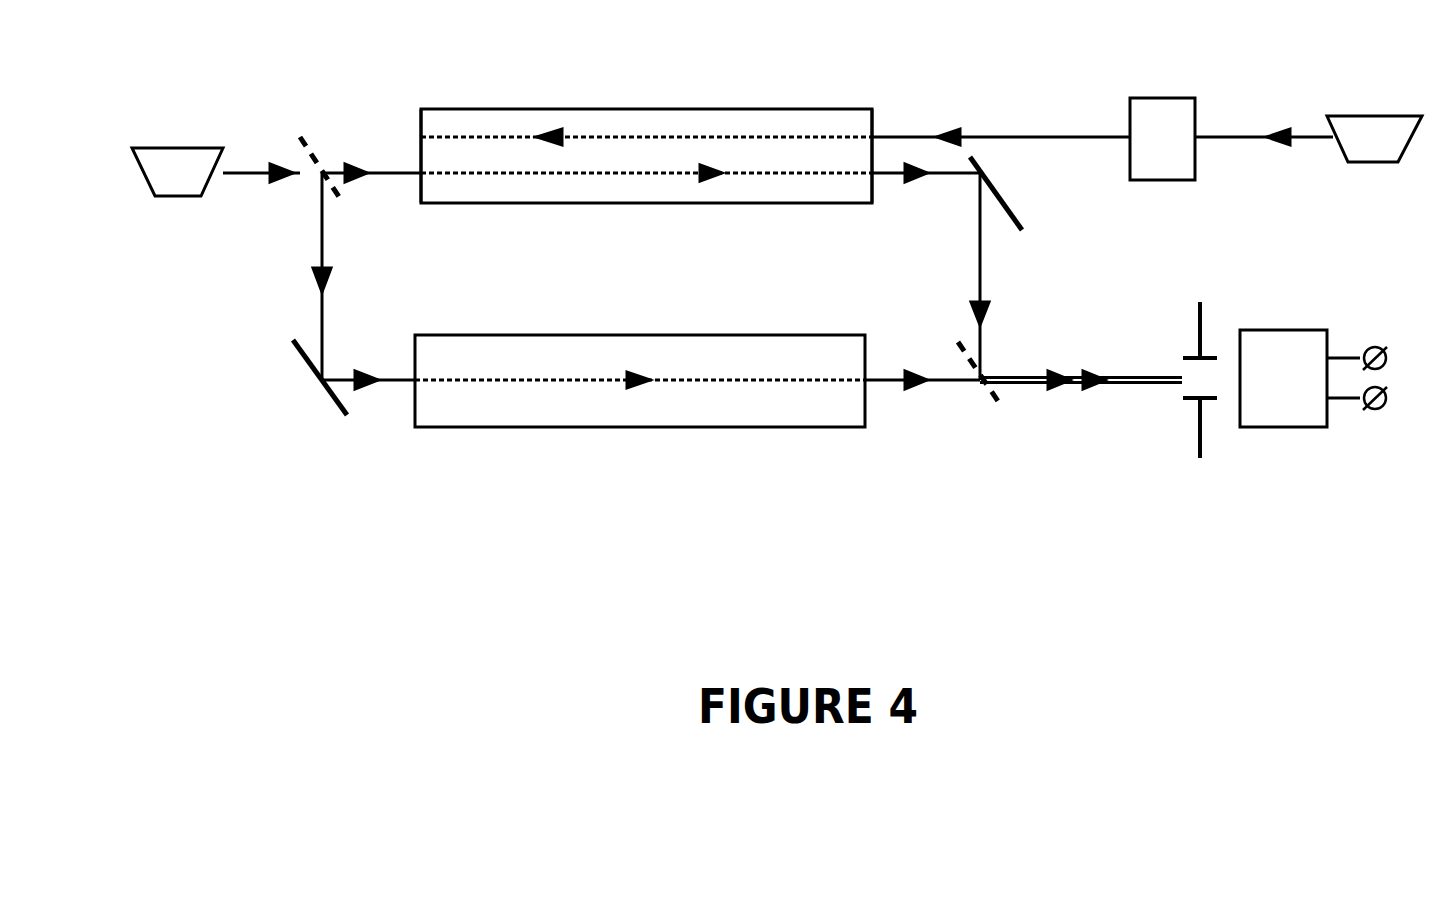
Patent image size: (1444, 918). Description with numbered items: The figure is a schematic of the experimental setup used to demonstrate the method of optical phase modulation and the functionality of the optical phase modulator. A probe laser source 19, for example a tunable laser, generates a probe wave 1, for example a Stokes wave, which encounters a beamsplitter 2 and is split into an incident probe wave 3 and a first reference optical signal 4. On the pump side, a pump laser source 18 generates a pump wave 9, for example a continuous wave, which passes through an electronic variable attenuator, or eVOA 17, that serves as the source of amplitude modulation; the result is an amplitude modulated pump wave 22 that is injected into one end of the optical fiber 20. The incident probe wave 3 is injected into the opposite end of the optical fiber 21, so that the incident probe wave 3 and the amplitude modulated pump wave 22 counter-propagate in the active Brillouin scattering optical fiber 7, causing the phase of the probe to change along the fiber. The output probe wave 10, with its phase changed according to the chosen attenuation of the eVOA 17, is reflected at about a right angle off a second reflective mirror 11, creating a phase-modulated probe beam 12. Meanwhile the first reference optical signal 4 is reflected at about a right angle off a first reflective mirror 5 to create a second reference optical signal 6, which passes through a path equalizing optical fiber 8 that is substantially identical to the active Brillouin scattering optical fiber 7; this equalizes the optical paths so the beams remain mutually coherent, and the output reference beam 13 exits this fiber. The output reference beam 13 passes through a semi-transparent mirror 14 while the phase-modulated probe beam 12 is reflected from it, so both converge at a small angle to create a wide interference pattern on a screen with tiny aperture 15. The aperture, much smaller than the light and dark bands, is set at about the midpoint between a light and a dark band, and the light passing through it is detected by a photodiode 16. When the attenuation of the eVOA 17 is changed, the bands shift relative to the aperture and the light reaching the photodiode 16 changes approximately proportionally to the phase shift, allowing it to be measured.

The probe wave 1 is at (228, 176).
The beamsplitter 2 is at (302, 133).
The incident probe wave 3 is at (400, 172).
The first reference optical signal 4 is at (322, 238).
The first reflective mirror 5 is at (347, 415).
The second reference optical signal 6 is at (337, 378).
The active Brillouin scattering optical fiber 7 is at (718, 108).
The path equalizing optical fiber 8 is at (800, 334).
The pump wave 9 is at (1312, 137).
The output probe wave 10 is at (882, 176).
The second reflective mirror 11 is at (1023, 231).
The phase-modulated probe beam 12 is at (982, 242).
The output reference beam 13 is at (884, 383).
The semi-transparent mirror 14 is at (958, 342).
The screen with tiny aperture 15 is at (1200, 452).
The photodiode 16 is at (1320, 330).
The electronic variable attenuator (eVOA) 17 is at (1183, 98).
The pump laser source 18 is at (1413, 116).
The probe laser source 19 is at (158, 200).
The end of the optical fiber 20 is at (872, 127).
The opposite end of the optical fiber 21 is at (421, 118).
The amplitude modulated pump wave 22 is at (1088, 137).